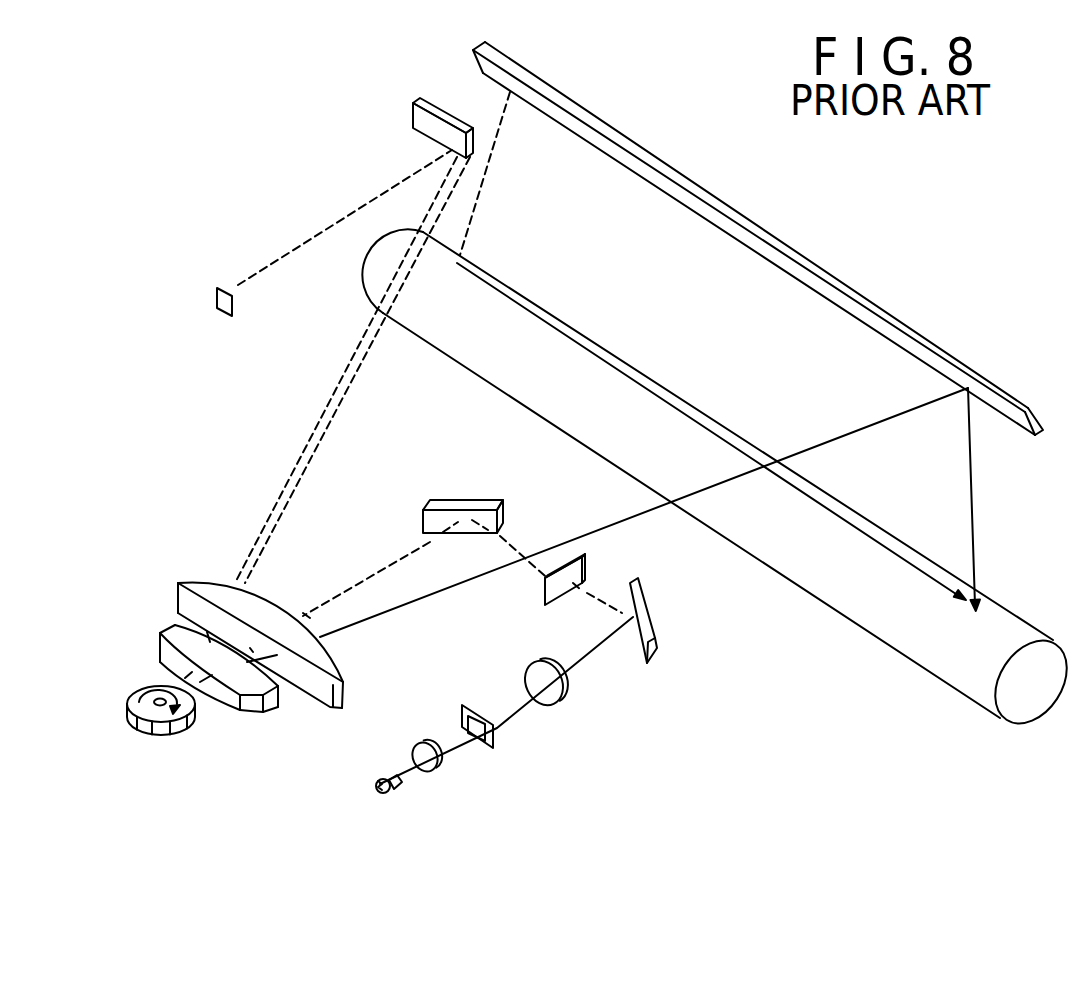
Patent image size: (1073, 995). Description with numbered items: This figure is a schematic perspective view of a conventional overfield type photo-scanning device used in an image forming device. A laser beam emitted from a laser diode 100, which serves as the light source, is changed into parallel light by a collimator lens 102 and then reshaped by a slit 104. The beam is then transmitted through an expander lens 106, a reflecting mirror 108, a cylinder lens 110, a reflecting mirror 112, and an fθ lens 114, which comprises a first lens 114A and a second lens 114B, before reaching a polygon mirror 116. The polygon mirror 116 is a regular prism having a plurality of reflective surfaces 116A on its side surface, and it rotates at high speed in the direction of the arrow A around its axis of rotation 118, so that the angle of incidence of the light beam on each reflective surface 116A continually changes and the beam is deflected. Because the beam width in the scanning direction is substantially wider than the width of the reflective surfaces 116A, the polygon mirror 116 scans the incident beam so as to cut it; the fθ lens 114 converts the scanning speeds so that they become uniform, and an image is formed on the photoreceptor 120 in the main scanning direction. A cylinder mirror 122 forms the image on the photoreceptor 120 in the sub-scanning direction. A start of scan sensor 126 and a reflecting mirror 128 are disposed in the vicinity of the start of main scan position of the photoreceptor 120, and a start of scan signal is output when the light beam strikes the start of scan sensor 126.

The laser diode 100 is at (400, 783).
The collimator lens 102 is at (443, 760).
The slit 104 is at (497, 740).
The expander lens 106 is at (568, 690).
The reflecting mirror 108 is at (655, 612).
The cylinder lens 110 is at (597, 573).
The reflecting mirror 112 is at (443, 502).
The fθ lens 114 is at (256, 703).
The first lens 114A is at (278, 783).
The second lens 114B is at (320, 708).
The polygon mirror 116 is at (122, 708).
The reflective surfaces 116A is at (131, 716).
The rotation axis of polygon mirror 118 is at (128, 690).
The photoreceptor 120 is at (973, 702).
The cylinder mirror 122 is at (633, 141).
The start of scan sensor 126 is at (222, 305).
The reflecting mirror 128 is at (437, 110).
The arrow A is at (159, 691).